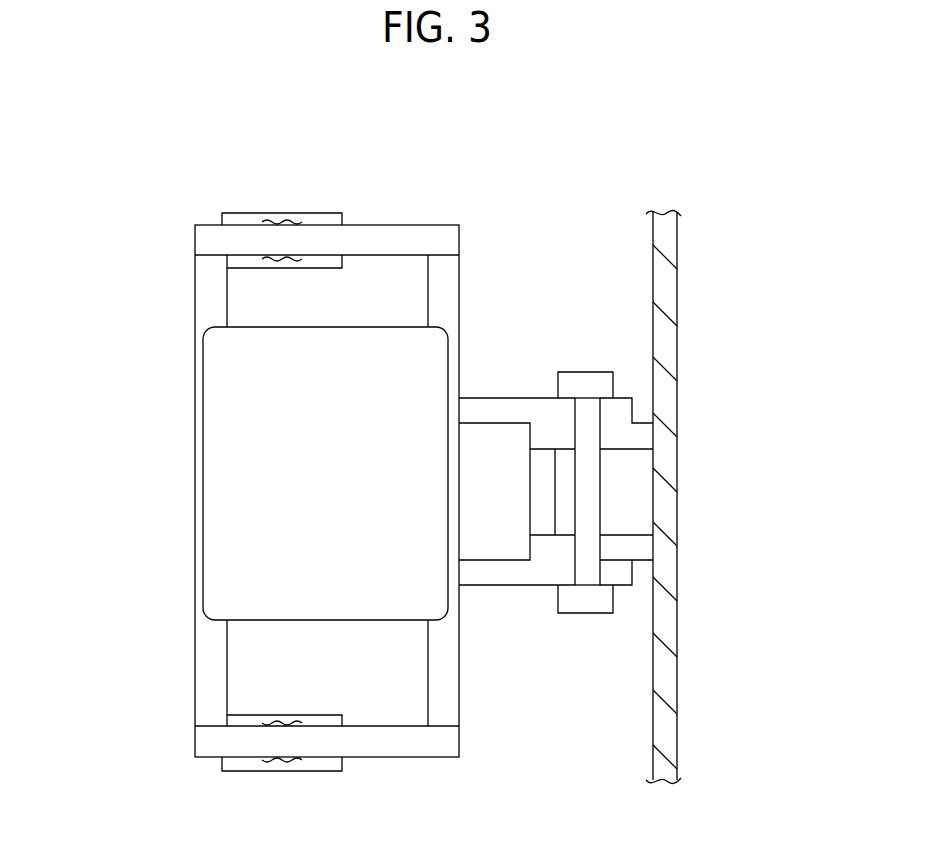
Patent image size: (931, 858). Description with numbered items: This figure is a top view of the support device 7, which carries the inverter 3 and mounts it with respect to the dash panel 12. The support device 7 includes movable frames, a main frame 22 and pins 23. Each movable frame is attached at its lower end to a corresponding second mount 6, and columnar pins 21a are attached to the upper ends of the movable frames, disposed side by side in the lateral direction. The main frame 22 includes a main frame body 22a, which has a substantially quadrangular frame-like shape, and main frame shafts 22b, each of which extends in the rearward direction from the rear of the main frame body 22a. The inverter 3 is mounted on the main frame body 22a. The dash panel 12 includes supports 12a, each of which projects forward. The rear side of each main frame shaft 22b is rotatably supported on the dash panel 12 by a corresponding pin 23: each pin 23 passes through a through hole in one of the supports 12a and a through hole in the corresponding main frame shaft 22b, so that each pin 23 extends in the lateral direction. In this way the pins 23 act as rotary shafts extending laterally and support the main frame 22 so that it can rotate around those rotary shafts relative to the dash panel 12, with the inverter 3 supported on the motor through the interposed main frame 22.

The inverter 3 is at (226, 397).
The second mount 6 is at (235, 212).
The support device 7 is at (146, 348).
The dash panel 12 is at (670, 290).
The support 12a is at (644, 432).
The pin 21a is at (283, 214).
The main frame 22 is at (455, 241).
The main frame body 22a is at (216, 673).
The main frame shaft 22b is at (506, 576).
The pin 23 is at (587, 604).